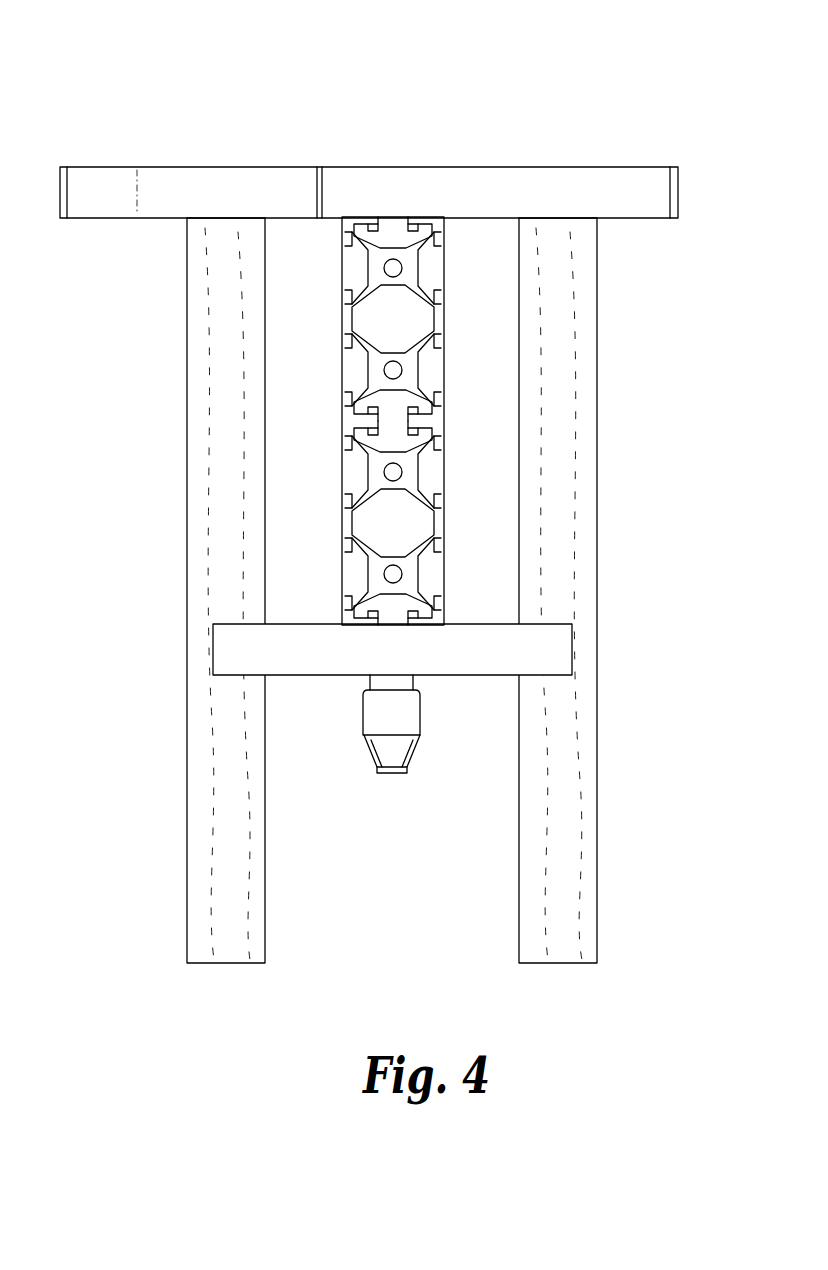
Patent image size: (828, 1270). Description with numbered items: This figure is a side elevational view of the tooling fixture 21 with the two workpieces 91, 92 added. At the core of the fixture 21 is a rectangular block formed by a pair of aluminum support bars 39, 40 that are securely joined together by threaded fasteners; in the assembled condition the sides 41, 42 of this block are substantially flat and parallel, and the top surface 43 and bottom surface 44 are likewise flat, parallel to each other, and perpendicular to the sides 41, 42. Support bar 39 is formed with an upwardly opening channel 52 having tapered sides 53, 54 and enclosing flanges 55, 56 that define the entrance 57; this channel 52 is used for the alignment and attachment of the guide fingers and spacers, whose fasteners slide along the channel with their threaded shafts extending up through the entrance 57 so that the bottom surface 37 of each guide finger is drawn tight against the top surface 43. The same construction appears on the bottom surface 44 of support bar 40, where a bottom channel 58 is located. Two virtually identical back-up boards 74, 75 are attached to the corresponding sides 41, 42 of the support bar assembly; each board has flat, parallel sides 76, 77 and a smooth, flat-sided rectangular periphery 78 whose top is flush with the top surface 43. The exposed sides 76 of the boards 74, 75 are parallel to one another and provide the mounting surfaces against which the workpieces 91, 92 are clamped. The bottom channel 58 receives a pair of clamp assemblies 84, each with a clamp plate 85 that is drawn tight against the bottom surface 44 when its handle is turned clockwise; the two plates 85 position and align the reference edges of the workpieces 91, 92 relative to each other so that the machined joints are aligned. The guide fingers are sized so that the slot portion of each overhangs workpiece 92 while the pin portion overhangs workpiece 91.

The tooling fixture 21 is at (116, 513).
The bottom surface 37 is at (168, 218).
The support bar 39 is at (445, 313).
The support bar 40 is at (446, 512).
The side 41 is at (446, 425).
The side 42 is at (341, 339).
The top surface 43 is at (407, 221).
The bottom surface 44 is at (357, 628).
The channel 52 is at (387, 224).
The tapered side 53 is at (320, 216).
The tapered side 54 is at (442, 245).
The enclosing flange 55 is at (380, 224).
The enclosing flange 56 is at (432, 232).
The entrance 57 is at (393, 165).
The channel 58 is at (400, 633).
The back-up board 74 is at (473, 457).
The back-up board 75 is at (291, 424).
The side 76 is at (264, 468).
The side 77 is at (340, 514).
The rectangular periphery 78 is at (510, 217).
The clamp assembly 84 is at (390, 717).
The clamp plate 85 is at (233, 665).
The workpiece 91 is at (224, 964).
The workpiece 92 is at (548, 912).